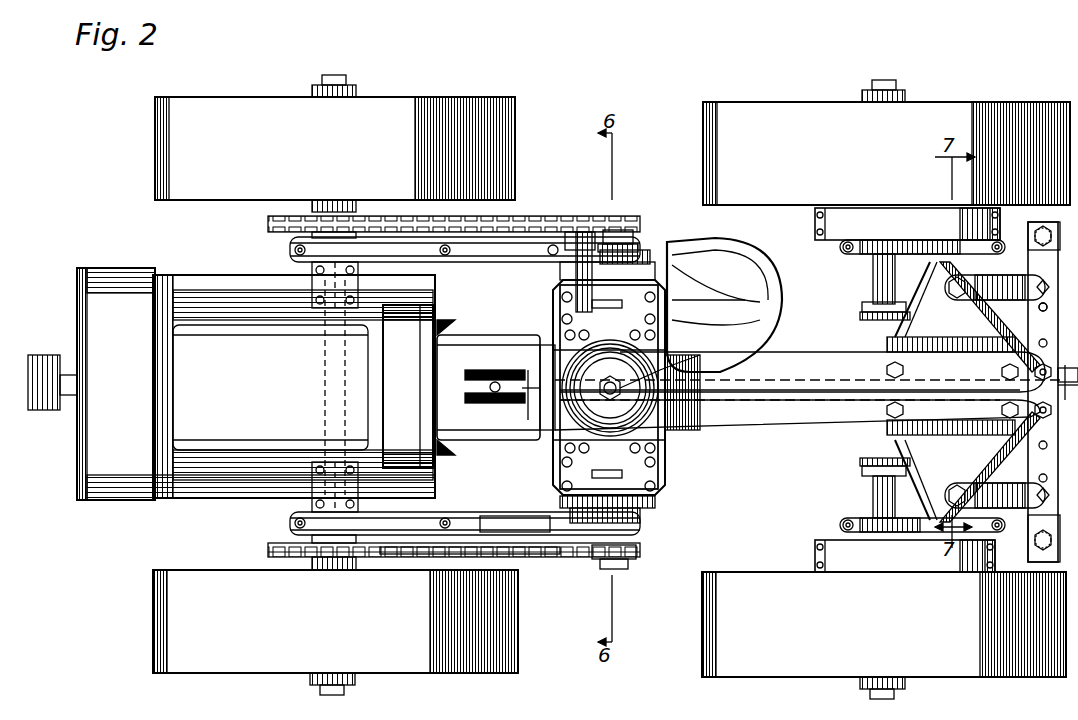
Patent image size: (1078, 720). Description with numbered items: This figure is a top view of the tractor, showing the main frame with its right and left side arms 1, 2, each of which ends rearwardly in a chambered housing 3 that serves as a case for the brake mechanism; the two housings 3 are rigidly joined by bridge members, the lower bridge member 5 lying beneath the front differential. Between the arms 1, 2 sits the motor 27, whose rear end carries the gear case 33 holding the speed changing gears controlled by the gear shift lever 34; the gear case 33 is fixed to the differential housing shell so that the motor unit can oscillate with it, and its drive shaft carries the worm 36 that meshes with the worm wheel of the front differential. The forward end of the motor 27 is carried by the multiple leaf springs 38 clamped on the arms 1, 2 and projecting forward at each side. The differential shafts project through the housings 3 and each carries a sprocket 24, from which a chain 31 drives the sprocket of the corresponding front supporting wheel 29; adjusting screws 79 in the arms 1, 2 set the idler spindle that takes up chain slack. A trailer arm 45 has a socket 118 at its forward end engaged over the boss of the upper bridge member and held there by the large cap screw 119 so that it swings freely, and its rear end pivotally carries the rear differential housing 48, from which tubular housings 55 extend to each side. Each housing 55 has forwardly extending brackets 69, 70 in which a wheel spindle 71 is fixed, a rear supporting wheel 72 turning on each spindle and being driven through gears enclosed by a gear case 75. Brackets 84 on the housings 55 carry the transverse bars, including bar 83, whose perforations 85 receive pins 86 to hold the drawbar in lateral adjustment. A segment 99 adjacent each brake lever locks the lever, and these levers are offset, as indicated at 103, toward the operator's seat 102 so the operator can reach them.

The right side arm 1 is at (530, 240).
The left side arm 2 is at (495, 520).
The chambered housing 3 is at (650, 520).
The lower bridge member 5 is at (800, 390).
The sprocket 24 is at (630, 560).
The motor 27 is at (231, 384).
The front supporting wheel 29 is at (155, 126).
The chain 31 is at (546, 560).
The gear case 33 is at (500, 345).
The gear shift lever 34 is at (495, 398).
The worm 36 is at (410, 308).
The multiple leaf spring 38 is at (205, 498).
The trailer arm 45 is at (785, 428).
The rear differential housing 48 is at (890, 430).
The tubular housing 55 is at (900, 300).
The bracket 69 is at (860, 475).
The bracket 70 is at (860, 518).
The wheel spindle 71 is at (873, 496).
The rear supporting wheel 72 is at (780, 115).
The gear case 75 is at (815, 555).
The adjusting screw 79 is at (548, 520).
The transverse bar 83 is at (1030, 468).
The bracket 84 is at (1012, 282).
The perforation 85 is at (1040, 307).
The pin 86 is at (990, 326).
The segment 99 is at (660, 478).
The operator's seat 102 is at (724, 305).
The offset 103 is at (598, 258).
The socket 118 is at (610, 388).
The cap screw 119 is at (660, 365).